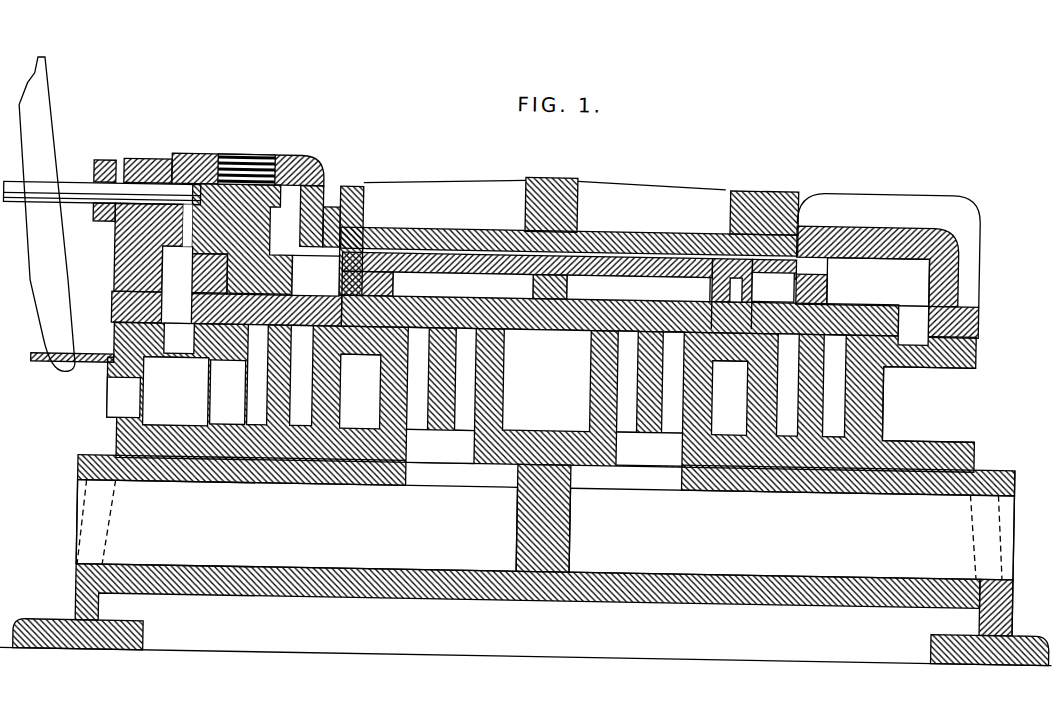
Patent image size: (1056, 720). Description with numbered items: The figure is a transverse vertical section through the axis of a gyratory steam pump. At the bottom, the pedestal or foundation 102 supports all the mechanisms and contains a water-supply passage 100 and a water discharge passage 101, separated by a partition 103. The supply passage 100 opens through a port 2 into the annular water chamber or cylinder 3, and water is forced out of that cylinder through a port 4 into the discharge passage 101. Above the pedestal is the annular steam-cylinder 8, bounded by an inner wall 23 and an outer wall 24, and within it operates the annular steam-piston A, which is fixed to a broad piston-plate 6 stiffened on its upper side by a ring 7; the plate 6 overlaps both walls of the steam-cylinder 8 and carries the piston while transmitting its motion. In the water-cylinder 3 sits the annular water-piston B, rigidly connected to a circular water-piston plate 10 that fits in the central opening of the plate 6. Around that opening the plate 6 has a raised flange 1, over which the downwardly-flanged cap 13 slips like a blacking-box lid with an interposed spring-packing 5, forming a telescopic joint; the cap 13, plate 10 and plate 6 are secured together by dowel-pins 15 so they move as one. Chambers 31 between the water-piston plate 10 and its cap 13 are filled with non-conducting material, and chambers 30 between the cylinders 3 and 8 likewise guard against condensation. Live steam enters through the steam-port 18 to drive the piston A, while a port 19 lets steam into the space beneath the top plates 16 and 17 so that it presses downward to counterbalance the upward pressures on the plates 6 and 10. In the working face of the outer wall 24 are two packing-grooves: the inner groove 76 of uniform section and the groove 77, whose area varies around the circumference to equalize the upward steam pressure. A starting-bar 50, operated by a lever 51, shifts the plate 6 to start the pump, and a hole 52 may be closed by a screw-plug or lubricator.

The raised flange 1 is at (758, 276).
The port 2 is at (440, 446).
The annular water chamber or cylinder 3 is at (546, 380).
The port 4 is at (649, 449).
The spring-packing 5 is at (356, 272).
The piston-plate 6 is at (337, 288).
The ring 7 is at (293, 291).
The annular steam-cylinder 8 is at (547, 381).
The water-piston plate 10 is at (552, 332).
The cap 13 is at (500, 253).
The dowel-pins 15 is at (707, 232).
The top plate 16 is at (875, 214).
The top plate 17 is at (631, 223).
The steam-port 18 is at (176, 391).
The port 19 is at (179, 339).
The inner wall 23 is at (336, 367).
The outer wall 24 is at (882, 372).
The chambers 30 is at (544, 394).
The chambers 31 is at (551, 287).
The starting-bar 50 is at (102, 179).
The lever 51 is at (45, 213).
The hole 52 is at (265, 158).
The inner packing-groove 76 is at (888, 281).
The packing-groove 77 is at (173, 321).
The water-supply passage 100 is at (296, 526).
The water discharge passage 101 is at (791, 534).
The pedestal or foundation 102 is at (526, 636).
The partition 103 is at (528, 516).
The annular steam-piston A is at (566, 354).
The annular water-piston B is at (546, 352).